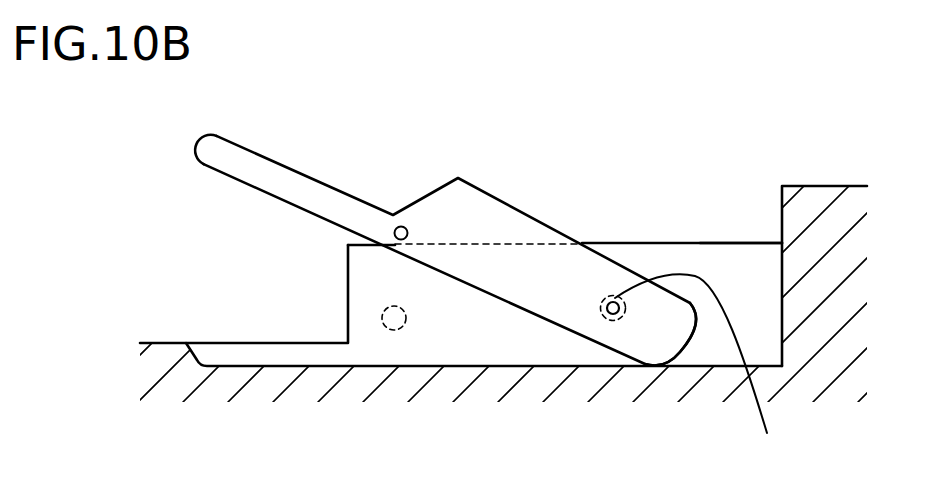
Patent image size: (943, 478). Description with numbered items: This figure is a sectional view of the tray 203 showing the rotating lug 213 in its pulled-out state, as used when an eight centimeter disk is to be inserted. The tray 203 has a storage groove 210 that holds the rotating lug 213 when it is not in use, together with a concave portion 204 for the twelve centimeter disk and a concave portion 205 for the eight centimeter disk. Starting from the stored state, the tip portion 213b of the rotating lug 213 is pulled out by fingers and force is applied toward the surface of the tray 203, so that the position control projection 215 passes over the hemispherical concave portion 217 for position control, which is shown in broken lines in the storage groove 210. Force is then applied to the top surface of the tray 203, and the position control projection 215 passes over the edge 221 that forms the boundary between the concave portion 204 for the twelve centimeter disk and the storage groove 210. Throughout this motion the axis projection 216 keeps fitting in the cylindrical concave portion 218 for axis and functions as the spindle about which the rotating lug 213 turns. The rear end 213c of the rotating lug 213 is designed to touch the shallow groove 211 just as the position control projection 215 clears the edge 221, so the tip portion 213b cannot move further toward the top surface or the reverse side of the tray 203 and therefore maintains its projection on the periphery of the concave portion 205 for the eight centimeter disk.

The tray 203 is at (827, 185).
The concave portion for 12 cm disk 204 is at (622, 243).
The concave portion for 8 cm disk 205 is at (160, 342).
The storage groove 210 is at (732, 257).
The shallow groove 211 is at (485, 353).
The rotating lug 213 is at (305, 192).
The tip portion 213b is at (218, 134).
The rear end 213c is at (668, 345).
The position control projection 215 is at (402, 226).
The axis projection 216 is at (608, 318).
The concave portion for position control 217 is at (386, 328).
The concave portion for axis 218 is at (704, 373).
The edge 221 is at (377, 243).